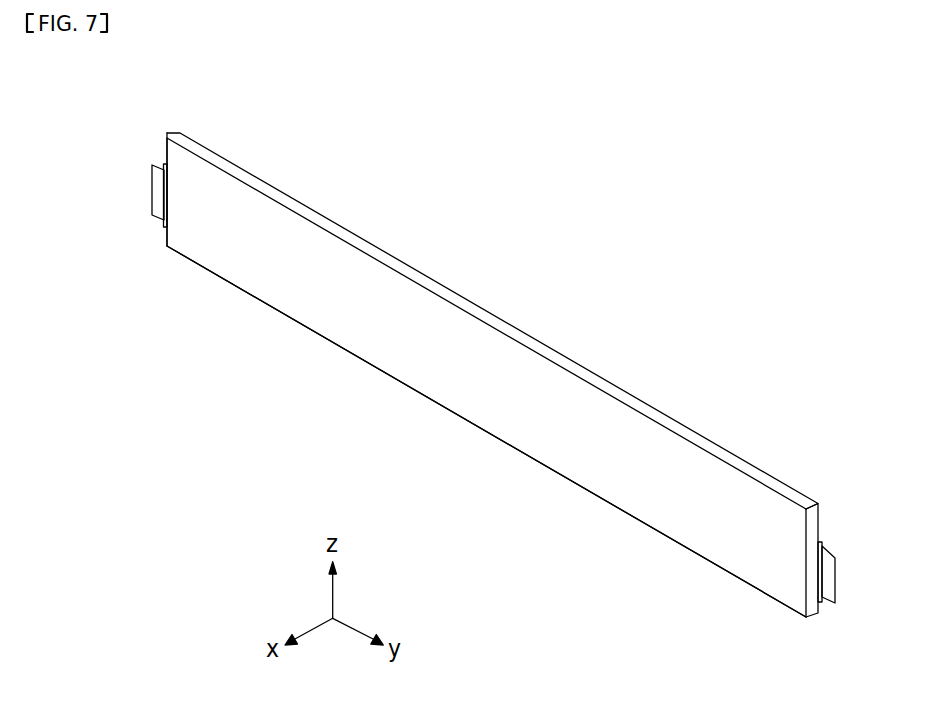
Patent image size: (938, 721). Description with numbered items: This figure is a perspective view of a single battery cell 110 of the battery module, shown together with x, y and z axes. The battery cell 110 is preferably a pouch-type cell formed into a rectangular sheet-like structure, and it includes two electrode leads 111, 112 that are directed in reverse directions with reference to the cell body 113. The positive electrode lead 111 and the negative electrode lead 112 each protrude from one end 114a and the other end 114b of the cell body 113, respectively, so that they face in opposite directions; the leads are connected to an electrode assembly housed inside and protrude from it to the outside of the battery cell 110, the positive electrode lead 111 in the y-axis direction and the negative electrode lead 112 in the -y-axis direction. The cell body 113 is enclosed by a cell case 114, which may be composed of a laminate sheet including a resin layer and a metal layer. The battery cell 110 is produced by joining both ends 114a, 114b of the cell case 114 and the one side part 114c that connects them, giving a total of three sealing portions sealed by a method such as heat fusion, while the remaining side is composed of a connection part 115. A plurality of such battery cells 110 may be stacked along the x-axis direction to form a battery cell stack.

The battery cell 110 is at (484, 116).
The positive electrode lead 111 is at (831, 588).
The negative electrode lead 112 is at (159, 197).
The cell body 113 is at (550, 450).
The cell case 114 is at (602, 326).
The one end of the cell case 114a is at (820, 524).
The other end of the cell case 114b is at (166, 146).
The one side part 114c is at (485, 320).
The connection part 115 is at (430, 400).